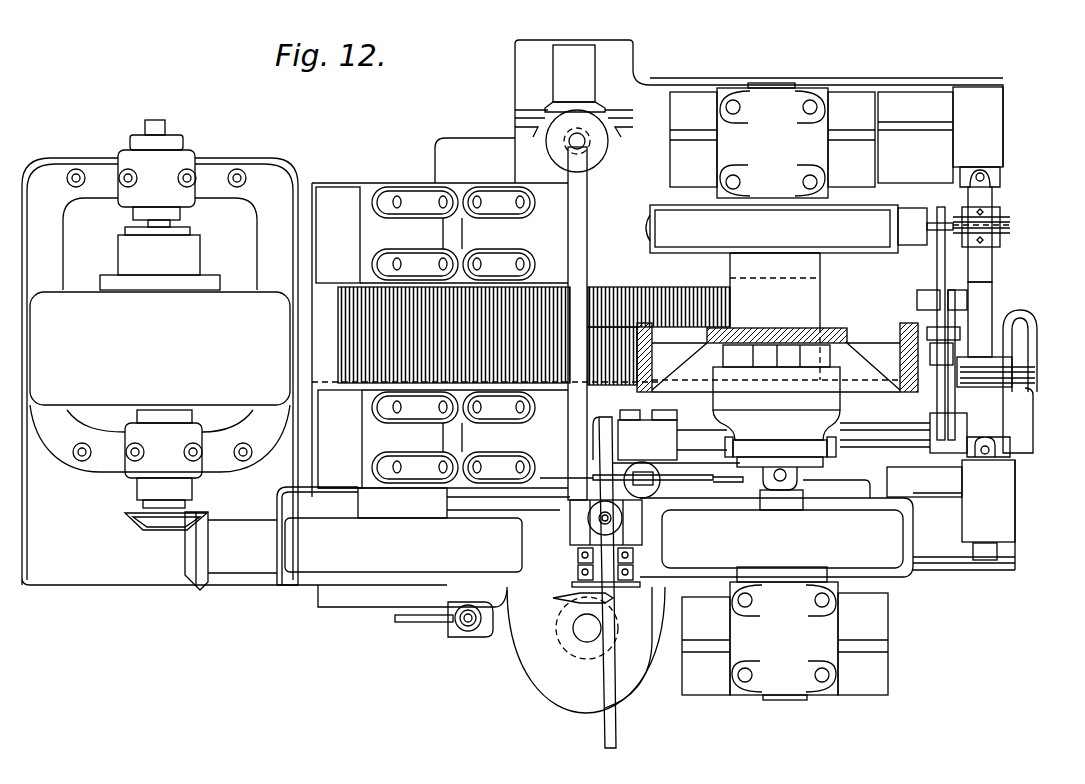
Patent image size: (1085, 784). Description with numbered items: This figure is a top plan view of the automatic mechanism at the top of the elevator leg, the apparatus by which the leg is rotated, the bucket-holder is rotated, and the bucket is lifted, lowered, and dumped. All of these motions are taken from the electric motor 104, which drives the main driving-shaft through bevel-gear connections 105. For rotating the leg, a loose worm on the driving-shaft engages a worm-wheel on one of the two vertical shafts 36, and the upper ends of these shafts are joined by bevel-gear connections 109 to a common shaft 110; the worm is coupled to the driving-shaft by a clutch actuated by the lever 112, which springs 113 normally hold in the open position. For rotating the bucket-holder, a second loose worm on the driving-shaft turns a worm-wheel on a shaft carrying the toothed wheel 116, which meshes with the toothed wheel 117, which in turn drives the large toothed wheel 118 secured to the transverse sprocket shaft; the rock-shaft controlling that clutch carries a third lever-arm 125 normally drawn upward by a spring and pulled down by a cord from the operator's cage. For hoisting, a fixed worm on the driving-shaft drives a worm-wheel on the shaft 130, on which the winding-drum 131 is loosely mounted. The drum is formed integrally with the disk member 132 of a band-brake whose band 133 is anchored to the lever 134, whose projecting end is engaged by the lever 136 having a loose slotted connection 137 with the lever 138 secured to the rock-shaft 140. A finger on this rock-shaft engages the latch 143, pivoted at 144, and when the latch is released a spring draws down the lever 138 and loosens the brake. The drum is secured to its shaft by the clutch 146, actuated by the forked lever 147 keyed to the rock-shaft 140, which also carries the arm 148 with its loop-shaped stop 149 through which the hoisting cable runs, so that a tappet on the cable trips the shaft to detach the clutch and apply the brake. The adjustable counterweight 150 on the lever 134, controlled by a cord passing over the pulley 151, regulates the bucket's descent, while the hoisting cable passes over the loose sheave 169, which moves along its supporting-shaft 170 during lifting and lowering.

The vertical shafts 36 is at (592, 150).
The electric motor 104 is at (160, 400).
The bevel-gear connections 105 is at (168, 527).
The bevel-gear connections 109 is at (581, 561).
The common shaft 110 is at (586, 190).
The lever 112 is at (675, 475).
The springs 113 is at (650, 492).
The toothed wheel 116 is at (387, 360).
The toothed wheel 117 is at (545, 390).
The large toothed wheel 118 is at (648, 292).
The third lever-arm 125 is at (420, 622).
The shaft 130 is at (758, 88).
The winding-drum 131 is at (777, 357).
The disk member 132 is at (850, 250).
The band 133 is at (772, 229).
The lever 134 is at (932, 232).
The lever 136 is at (993, 262).
The loose slotted connection 137 is at (940, 325).
The lever 138 is at (955, 400).
The rock-shaft 140 is at (870, 433).
The latch 143 is at (610, 693).
The latch pivot 144 is at (578, 570).
The clutch 146 is at (776, 427).
The forked lever 147 is at (836, 440).
The arm 148 is at (1030, 403).
The loop-shaped stop 149 is at (1032, 322).
The counterweight 150 is at (923, 226).
The pulley 151 is at (1004, 226).
The loose sheave 169 is at (1015, 377).
The supporting-shaft 170 is at (985, 302).